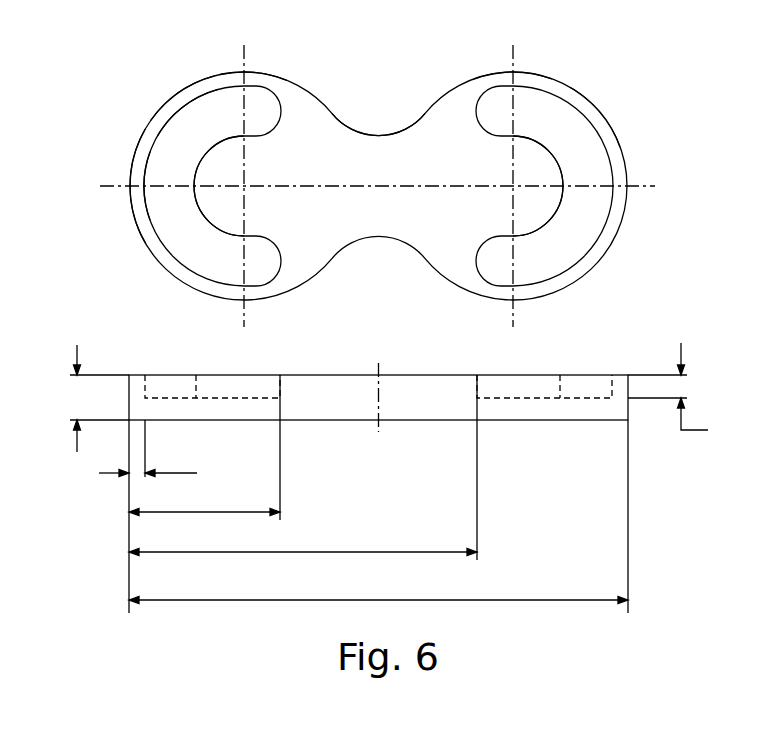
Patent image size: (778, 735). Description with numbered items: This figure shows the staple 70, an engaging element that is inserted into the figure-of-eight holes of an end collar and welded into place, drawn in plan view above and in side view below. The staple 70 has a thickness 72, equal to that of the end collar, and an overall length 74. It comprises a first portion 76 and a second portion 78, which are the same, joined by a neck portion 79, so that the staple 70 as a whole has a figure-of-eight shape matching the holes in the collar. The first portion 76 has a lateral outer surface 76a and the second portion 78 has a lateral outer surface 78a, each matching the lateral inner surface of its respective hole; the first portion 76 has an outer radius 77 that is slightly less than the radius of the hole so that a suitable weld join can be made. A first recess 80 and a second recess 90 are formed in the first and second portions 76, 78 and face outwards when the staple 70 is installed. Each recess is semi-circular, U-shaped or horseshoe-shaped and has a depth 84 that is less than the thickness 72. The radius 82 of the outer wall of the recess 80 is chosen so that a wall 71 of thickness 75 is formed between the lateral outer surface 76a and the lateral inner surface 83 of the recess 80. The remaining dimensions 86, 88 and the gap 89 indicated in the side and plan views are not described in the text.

The staple 70 is at (133, 245).
The wall 71 is at (182, 272).
The thickness 72 is at (345, 398).
The length 74 is at (378, 516).
The wall thickness 75 is at (575, 173).
The first portion 76 is at (200, 78).
The lateral outer surface 76a is at (257, 72).
The outer radius 77 is at (97, 169).
The second portion 78 is at (552, 73).
The lateral outer surface 78a is at (599, 108).
The neck portion 79 is at (373, 132).
The first recess 80 is at (170, 215).
The radius of the outer wall of the recess 82 is at (178, 110).
The lateral inner surface 83 is at (143, 177).
The depth 84 is at (432, 386).
The distance to second recess 86 is at (303, 467).
The first recess width 88 is at (204, 447).
The gap between C-shaped land and recess edge 89 is at (560, 200).
The second recess 90 is at (560, 253).